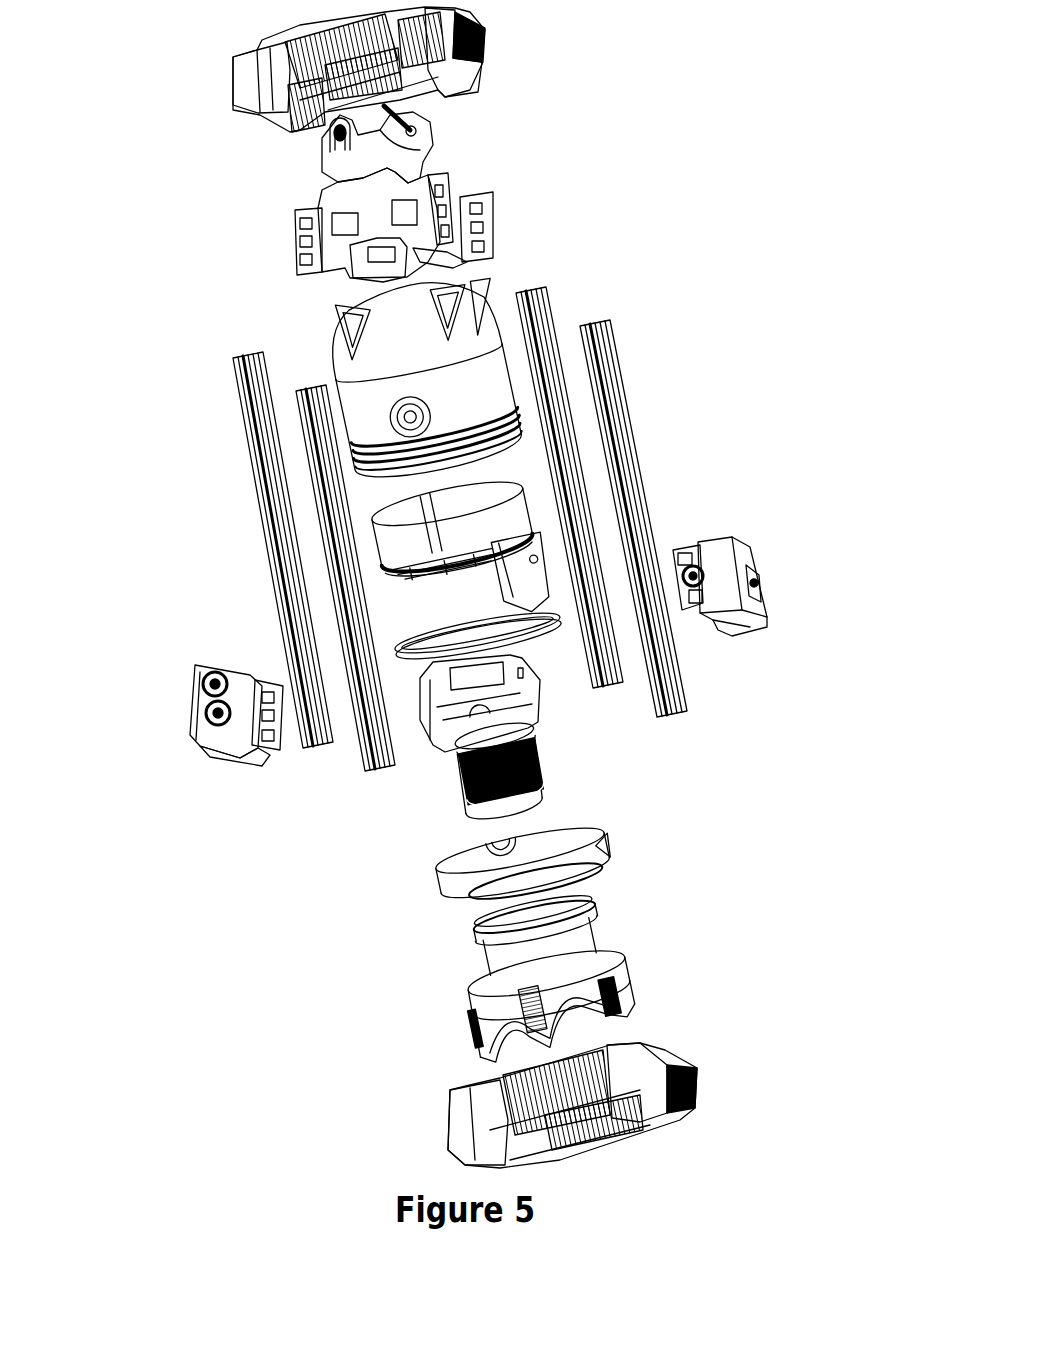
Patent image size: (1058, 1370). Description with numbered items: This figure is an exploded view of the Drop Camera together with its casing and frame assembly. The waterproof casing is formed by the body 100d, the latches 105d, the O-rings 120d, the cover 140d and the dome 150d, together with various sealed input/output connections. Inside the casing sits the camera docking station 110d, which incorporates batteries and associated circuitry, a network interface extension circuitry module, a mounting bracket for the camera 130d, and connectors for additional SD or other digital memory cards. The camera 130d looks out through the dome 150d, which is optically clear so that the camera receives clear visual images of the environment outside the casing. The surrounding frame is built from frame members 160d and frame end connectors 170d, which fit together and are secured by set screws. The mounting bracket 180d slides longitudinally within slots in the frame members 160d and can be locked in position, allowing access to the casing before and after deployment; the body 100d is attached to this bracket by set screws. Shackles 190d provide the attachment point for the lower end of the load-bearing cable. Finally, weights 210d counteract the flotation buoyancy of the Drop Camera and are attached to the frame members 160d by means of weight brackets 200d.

The body 100d is at (497, 288).
The latches 105d is at (446, 404).
The camera docking station 110d is at (537, 512).
The O-rings 120d is at (562, 630).
The camera 130d is at (452, 769).
The cover 140d is at (432, 878).
The dome 150d is at (636, 964).
The frame members 160d is at (302, 389).
The frame end connectors 170d is at (492, 33).
The mounting bracket 180d is at (447, 172).
The shackles 190d is at (398, 130).
The weight brackets 200d is at (257, 674).
The weights 210d is at (745, 536).